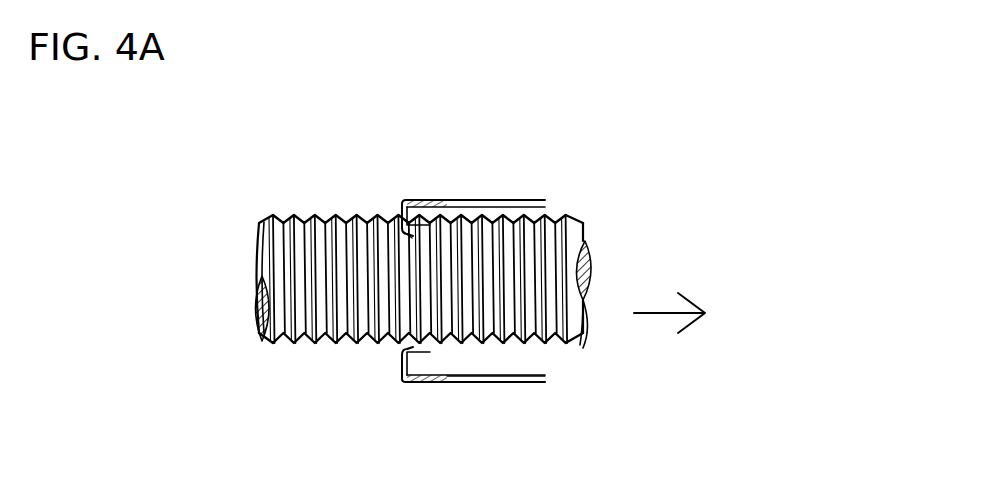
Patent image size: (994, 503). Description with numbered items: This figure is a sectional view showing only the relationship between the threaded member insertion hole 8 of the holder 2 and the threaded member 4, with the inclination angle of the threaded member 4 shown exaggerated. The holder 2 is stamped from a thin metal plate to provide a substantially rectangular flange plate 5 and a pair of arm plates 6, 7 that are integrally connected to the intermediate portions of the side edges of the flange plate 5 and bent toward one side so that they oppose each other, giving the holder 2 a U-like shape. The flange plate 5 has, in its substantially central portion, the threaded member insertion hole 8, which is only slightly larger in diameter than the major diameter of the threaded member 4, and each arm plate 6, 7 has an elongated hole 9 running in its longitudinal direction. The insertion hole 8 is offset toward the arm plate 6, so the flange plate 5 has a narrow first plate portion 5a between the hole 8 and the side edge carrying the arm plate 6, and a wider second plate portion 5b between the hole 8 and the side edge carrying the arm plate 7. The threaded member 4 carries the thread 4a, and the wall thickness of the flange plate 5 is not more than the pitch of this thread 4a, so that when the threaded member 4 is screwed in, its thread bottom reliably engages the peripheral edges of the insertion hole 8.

The holder 2 is at (543, 413).
The threaded member 4 is at (257, 256).
The thread 4a is at (337, 277).
The flange plate 5 is at (402, 368).
The first plate portion 5a is at (401, 201).
The second plate portion 5b is at (400, 363).
The arm plate 6 is at (438, 205).
The arm plate 7 is at (480, 378).
The threaded member insertion hole 8 is at (398, 238).
The elongated hole 9 is at (545, 378).